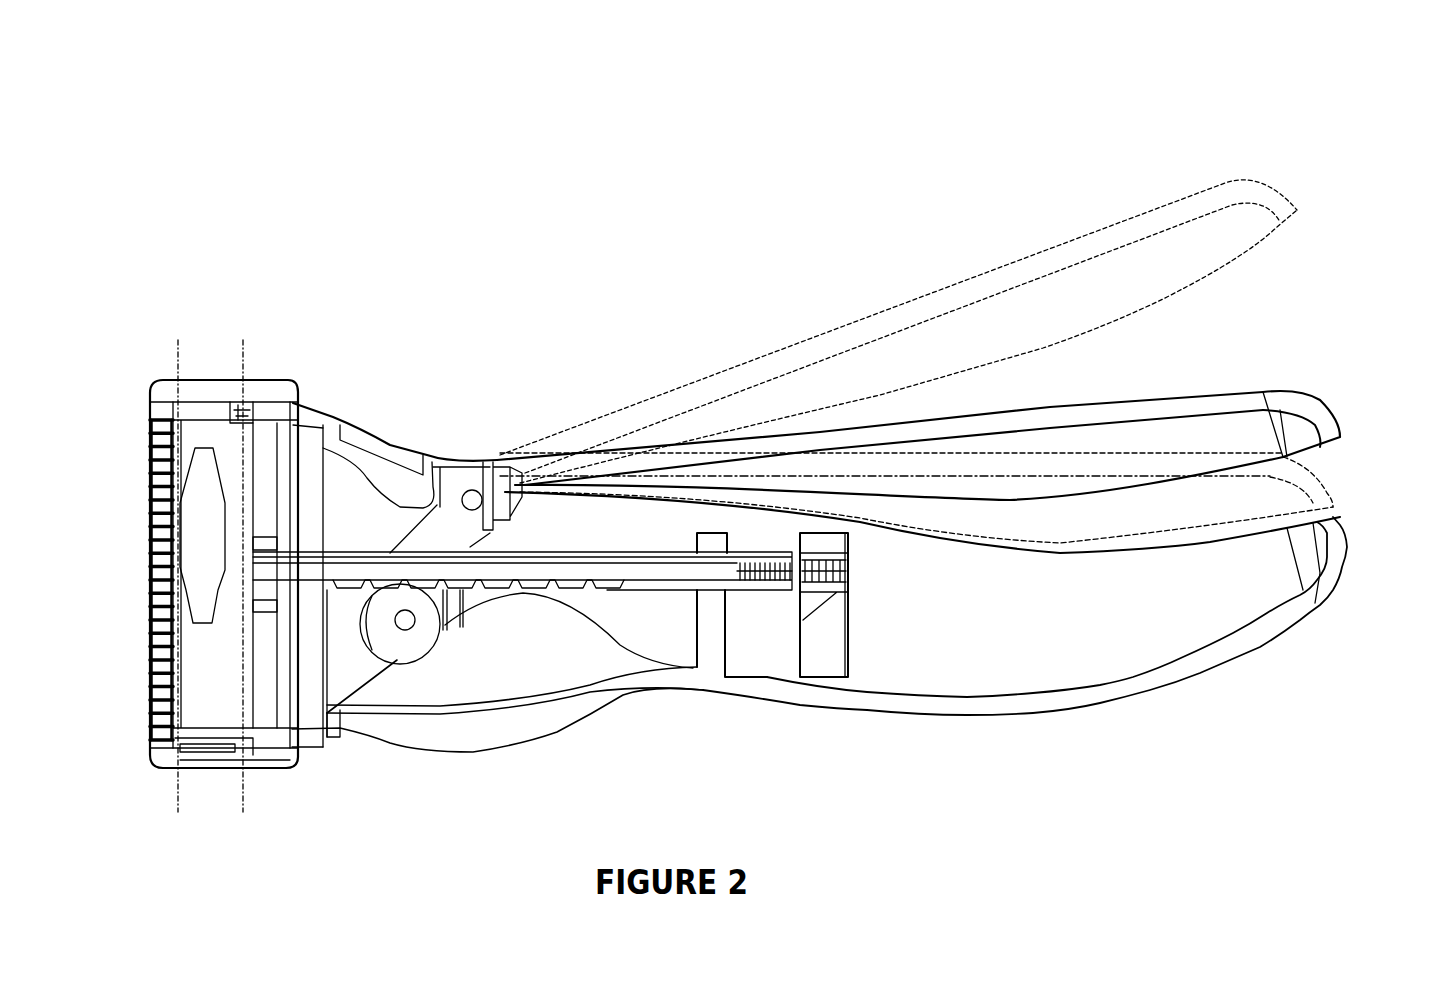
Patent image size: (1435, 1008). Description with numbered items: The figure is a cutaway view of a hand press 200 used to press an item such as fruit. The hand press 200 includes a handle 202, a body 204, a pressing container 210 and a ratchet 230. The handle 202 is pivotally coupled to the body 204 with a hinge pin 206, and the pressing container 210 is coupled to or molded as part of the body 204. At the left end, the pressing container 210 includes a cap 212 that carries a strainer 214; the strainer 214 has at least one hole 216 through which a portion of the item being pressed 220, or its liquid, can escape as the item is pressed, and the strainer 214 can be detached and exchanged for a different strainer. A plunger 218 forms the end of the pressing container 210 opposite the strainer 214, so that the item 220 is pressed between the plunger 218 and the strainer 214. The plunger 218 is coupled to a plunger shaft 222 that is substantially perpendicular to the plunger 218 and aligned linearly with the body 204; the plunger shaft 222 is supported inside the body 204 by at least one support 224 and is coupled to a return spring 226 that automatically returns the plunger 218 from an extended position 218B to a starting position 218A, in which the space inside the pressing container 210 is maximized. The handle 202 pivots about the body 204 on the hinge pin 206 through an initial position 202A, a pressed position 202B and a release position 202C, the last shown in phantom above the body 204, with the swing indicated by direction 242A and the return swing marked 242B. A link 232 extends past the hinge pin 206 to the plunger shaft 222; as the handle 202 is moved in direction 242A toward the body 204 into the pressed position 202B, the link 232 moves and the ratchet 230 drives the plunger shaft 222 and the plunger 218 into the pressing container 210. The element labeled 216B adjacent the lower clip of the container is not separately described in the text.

The hand press 200 is at (658, 125).
The handle 202 is at (1195, 398).
The initial position 202A is at (1260, 388).
The pressed position 202B is at (1340, 513).
The release position 202C is at (1243, 185).
The body 204 is at (960, 710).
The hinge pin 206 is at (464, 491).
The pressing container 210 is at (196, 408).
The cap 212 is at (224, 768).
The strainer 214 is at (150, 587).
The hole 216 is at (150, 683).
The lower clip member 216B is at (278, 668).
The plunger 218 is at (250, 445).
The starting position 218A is at (244, 368).
The extended position 218B is at (180, 360).
The item being pressed 220 is at (190, 517).
The plunger shaft 222 is at (670, 582).
The support 224 is at (713, 663).
The return spring 226 is at (763, 582).
The ratchet 230 is at (416, 642).
The link 232 is at (437, 527).
The direction toward body 242A is at (1400, 442).
The lever rotation direction B 242B is at (1400, 435).